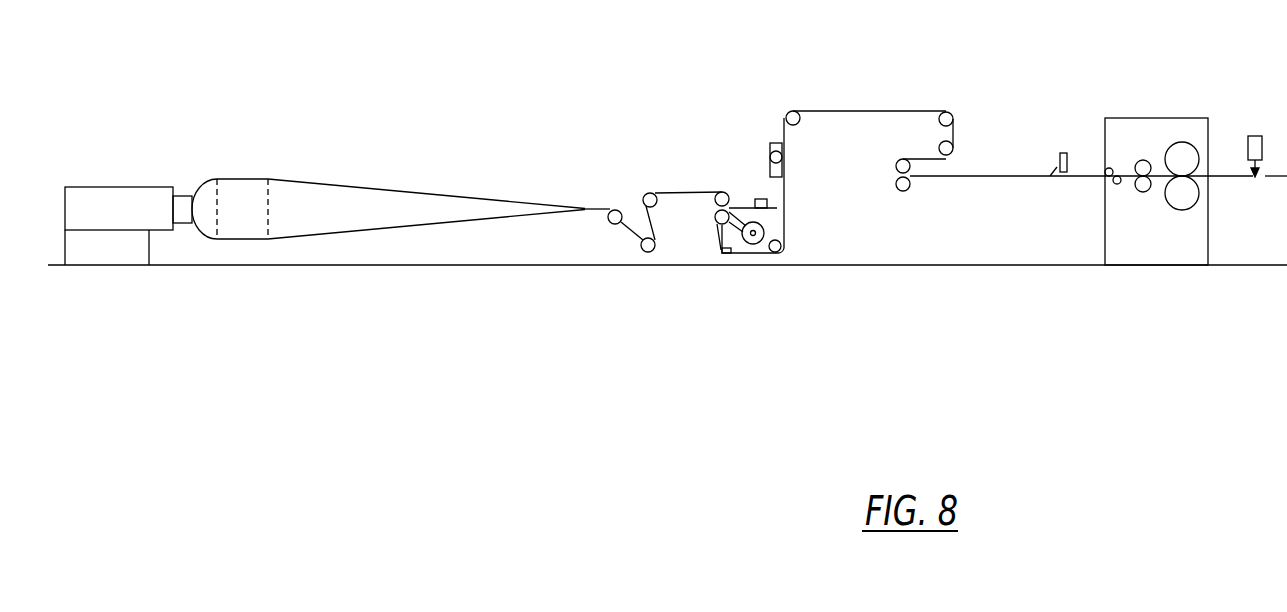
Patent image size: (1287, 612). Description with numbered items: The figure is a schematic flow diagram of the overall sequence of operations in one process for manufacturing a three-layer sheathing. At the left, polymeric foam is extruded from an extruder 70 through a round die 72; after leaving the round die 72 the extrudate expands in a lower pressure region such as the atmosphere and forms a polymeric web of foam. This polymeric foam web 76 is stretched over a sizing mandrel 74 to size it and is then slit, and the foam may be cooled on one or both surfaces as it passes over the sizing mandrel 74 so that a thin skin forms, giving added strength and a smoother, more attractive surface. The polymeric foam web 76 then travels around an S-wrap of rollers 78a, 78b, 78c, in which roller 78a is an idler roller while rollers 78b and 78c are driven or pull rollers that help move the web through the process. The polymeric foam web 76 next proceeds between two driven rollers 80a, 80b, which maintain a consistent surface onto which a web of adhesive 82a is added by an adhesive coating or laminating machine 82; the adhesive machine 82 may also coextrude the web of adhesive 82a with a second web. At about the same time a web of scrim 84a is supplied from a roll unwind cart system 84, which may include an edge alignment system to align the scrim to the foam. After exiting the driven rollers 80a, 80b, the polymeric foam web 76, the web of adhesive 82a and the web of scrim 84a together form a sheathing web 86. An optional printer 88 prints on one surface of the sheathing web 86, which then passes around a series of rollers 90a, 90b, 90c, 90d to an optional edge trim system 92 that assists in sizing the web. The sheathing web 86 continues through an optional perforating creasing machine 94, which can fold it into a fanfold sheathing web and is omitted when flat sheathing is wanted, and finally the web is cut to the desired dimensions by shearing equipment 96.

The extruder 70 is at (112, 187).
The round die 72 is at (181, 196).
The sizing mandrel 74 is at (247, 179).
The polymeric foam web 76 is at (592, 208).
The idler roller 78a is at (614, 225).
The driven roller 78b is at (648, 252).
The driven roller 78c is at (648, 193).
The driven roller 80a is at (717, 190).
The driven roller 80b is at (716, 214).
The adhesive machine 82 is at (762, 198).
The web of adhesive 82a is at (750, 198).
The roll unwind cart system 84 is at (757, 253).
The web of scrim 84a is at (777, 209).
The sheathing web 86 is at (717, 240).
The printer 88 is at (772, 143).
The roller 90a is at (943, 112).
The roller 90b is at (953, 151).
The roller 90c is at (923, 170).
The roller 90d is at (911, 187).
The edge trim system 92 is at (1062, 153).
The perforating creasing machine 94 is at (1172, 118).
The shearing equipment 96 is at (1254, 136).